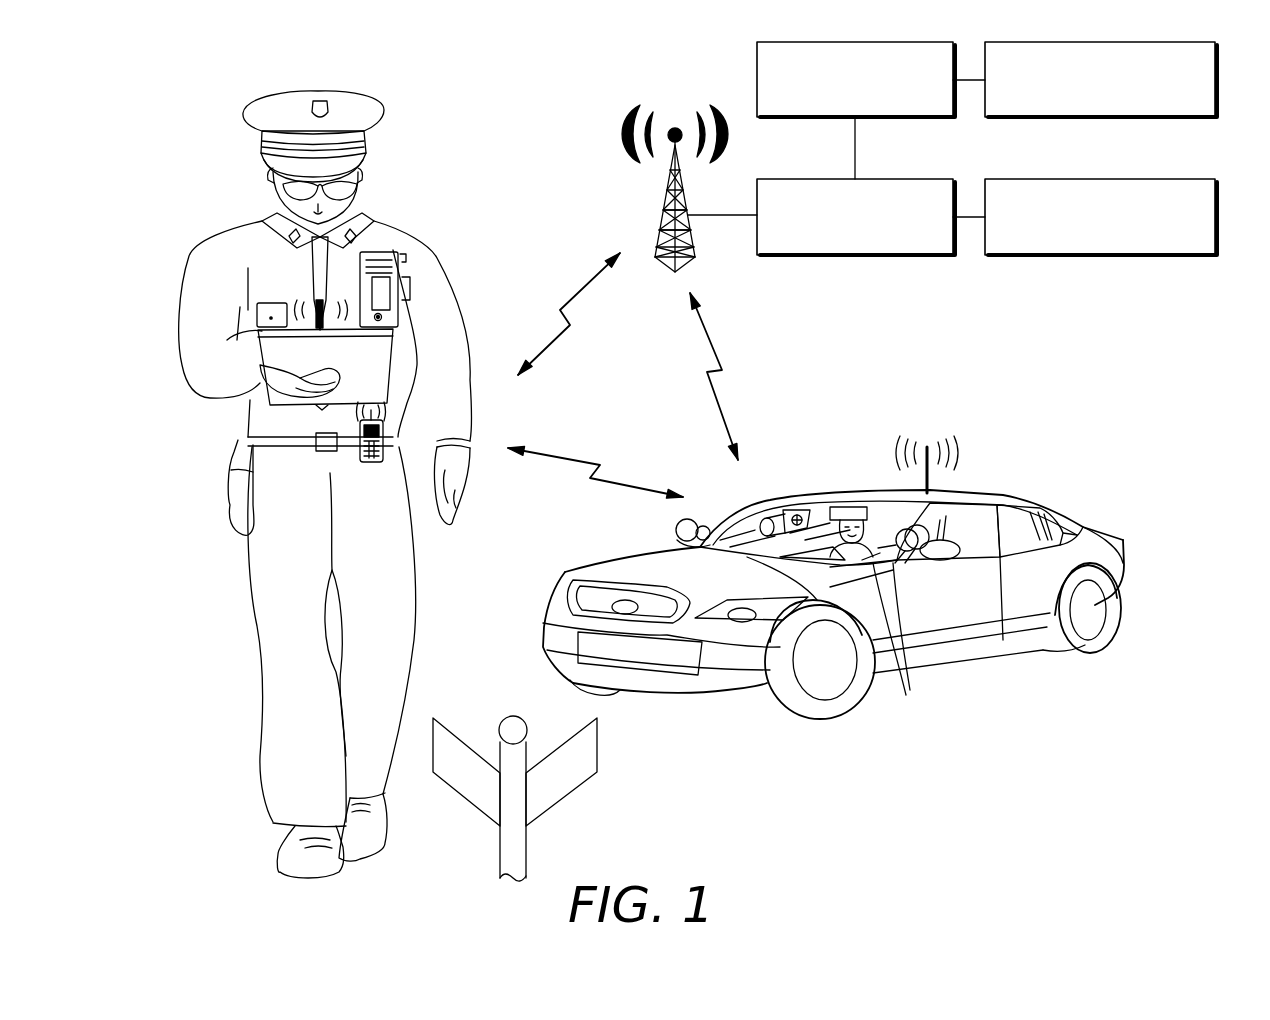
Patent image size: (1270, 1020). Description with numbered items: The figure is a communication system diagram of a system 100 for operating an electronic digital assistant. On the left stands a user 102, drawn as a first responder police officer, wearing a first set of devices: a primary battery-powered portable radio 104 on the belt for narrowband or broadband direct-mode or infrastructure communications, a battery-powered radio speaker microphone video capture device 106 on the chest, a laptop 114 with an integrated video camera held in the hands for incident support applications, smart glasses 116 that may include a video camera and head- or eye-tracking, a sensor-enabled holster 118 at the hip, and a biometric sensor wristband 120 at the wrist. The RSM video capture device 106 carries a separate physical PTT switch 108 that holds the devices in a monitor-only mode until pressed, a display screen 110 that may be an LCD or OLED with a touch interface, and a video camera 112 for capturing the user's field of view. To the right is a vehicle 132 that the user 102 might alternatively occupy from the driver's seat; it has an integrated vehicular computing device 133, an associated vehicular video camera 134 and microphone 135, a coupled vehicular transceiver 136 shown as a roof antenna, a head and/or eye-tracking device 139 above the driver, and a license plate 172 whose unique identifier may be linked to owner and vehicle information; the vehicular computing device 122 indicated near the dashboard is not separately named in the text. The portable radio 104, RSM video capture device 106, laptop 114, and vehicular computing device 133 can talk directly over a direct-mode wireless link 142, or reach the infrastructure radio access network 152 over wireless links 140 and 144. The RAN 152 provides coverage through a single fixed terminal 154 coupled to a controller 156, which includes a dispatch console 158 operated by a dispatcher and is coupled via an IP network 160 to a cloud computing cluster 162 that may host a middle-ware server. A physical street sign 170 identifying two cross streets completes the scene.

The system 100 is at (127, 102).
The user 102 is at (410, 203).
The portable radio 104 is at (387, 418).
The radio speaker microphone (RSM) video capture device 106 is at (373, 252).
The PTT switch 108 is at (407, 265).
The display screen 110 is at (412, 278).
The video camera 112 is at (384, 317).
The laptop 114 is at (270, 408).
The smart glasses 116 is at (278, 187).
The sensor-enabled holster 118 is at (240, 496).
The biometric sensor wristband 120 is at (470, 443).
The vehicular computing device 122 is at (907, 553).
The vehicle 132 is at (1058, 472).
The vehicular computing device 133 is at (911, 670).
The vehicular video camera 134 is at (765, 515).
The microphone 135 is at (805, 508).
The vehicular transceiver 136 is at (932, 481).
The head and/or eye-tracking device 139 is at (845, 507).
The wireless link 140 is at (598, 289).
The direct-mode wireless link 142 is at (572, 460).
The wireless link 144 is at (713, 354).
The infrastructure radio access network (RAN) 152 is at (598, 145).
The fixed terminal 154 is at (663, 230).
The controller 156 is at (923, 179).
The dispatch console 158 is at (1183, 179).
The IP network 160 is at (923, 42).
The cloud computing cluster 162 is at (1183, 42).
The street sign 170 is at (526, 860).
The license plate 172 is at (702, 668).